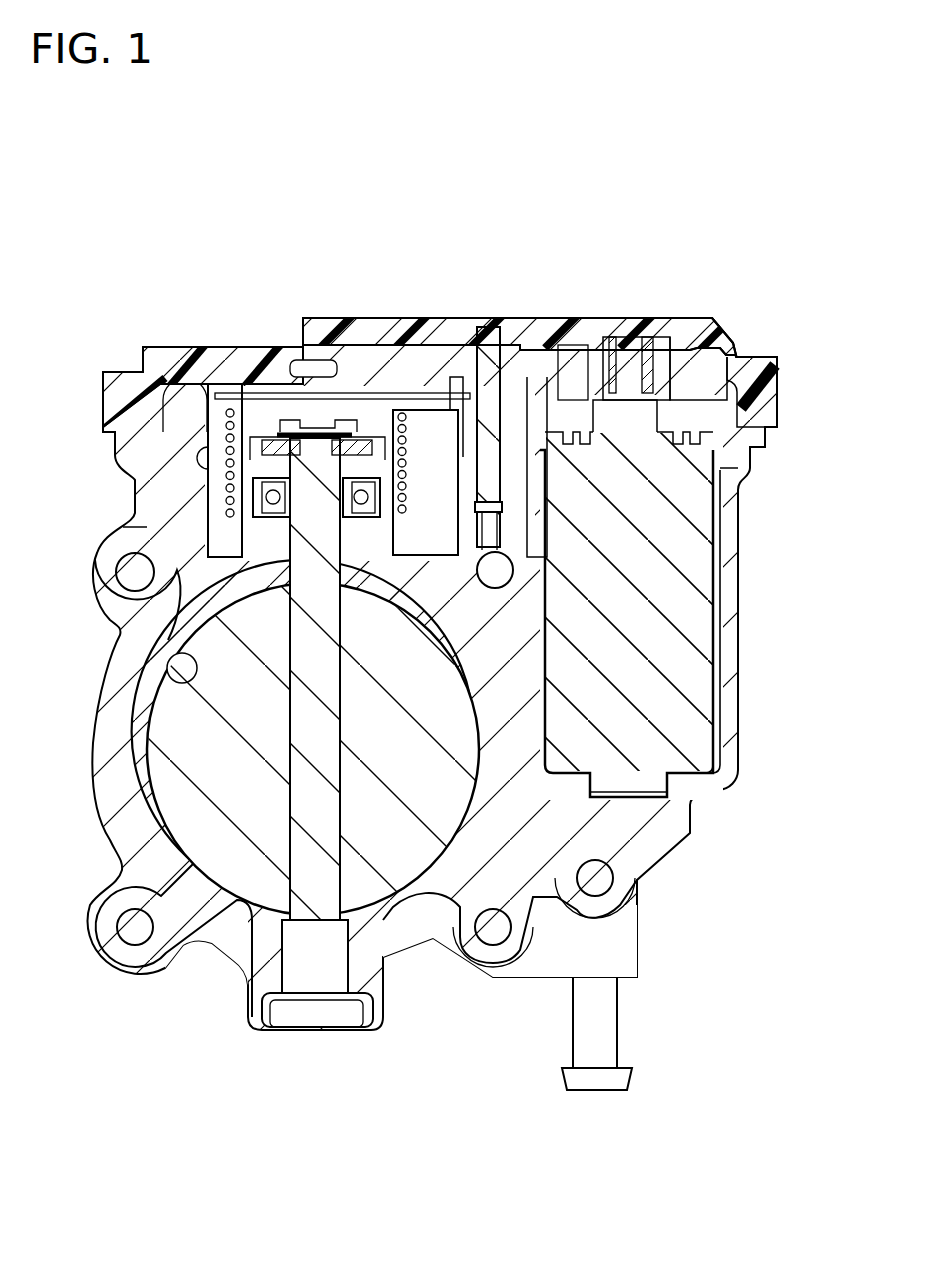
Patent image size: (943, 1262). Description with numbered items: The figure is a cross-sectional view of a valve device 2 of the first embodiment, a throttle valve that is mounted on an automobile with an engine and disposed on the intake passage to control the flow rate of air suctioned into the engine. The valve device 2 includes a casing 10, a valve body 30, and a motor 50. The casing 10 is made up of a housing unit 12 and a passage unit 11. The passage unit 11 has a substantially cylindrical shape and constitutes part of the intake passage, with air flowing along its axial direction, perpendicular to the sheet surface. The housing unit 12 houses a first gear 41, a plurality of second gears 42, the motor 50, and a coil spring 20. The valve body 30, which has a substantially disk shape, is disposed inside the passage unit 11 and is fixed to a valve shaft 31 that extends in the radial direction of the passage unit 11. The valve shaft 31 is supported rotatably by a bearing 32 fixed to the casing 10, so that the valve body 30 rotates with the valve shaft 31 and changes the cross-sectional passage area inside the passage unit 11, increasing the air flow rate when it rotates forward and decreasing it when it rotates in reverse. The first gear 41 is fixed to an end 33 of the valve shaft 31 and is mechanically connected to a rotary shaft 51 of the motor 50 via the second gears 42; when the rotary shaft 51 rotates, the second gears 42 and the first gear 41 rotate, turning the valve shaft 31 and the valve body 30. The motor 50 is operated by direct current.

The valve device 2 is at (212, 326).
The casing 10 is at (146, 527).
The passage unit 11 is at (175, 672).
The housing unit 12 is at (217, 468).
The coil spring 20 is at (227, 425).
The valve body 30 is at (173, 708).
The valve shaft 31 is at (300, 728).
The bearing 32 is at (260, 505).
The end of the valve shaft 33 is at (407, 468).
The first gear 41 is at (398, 392).
The second gears 42 is at (577, 363).
The motor 50 is at (710, 578).
The rotary shaft 51 is at (657, 375).